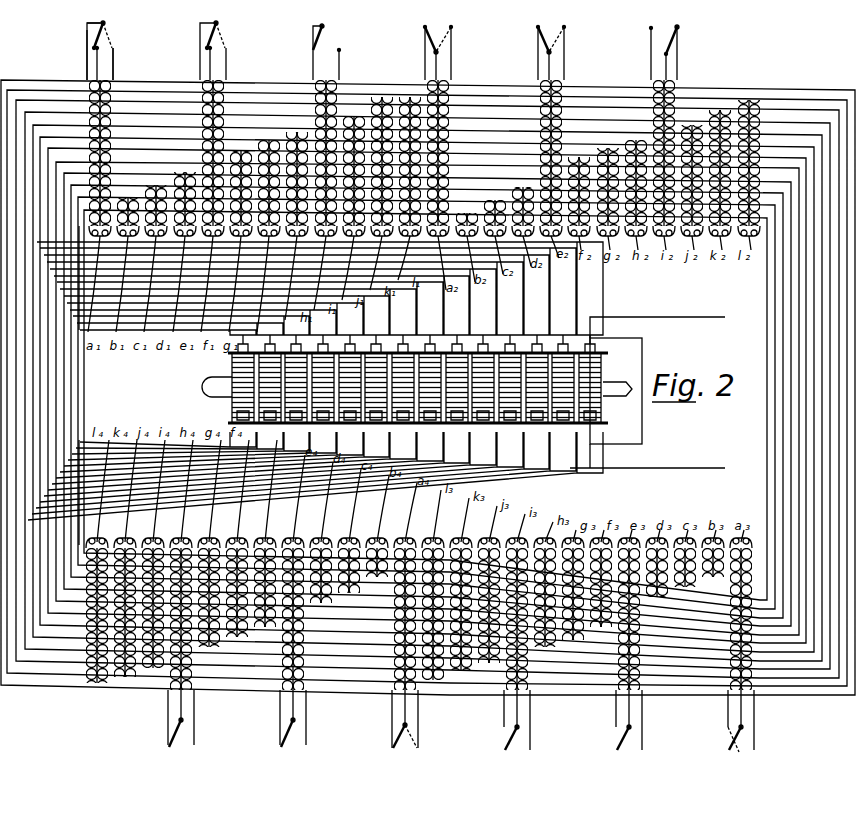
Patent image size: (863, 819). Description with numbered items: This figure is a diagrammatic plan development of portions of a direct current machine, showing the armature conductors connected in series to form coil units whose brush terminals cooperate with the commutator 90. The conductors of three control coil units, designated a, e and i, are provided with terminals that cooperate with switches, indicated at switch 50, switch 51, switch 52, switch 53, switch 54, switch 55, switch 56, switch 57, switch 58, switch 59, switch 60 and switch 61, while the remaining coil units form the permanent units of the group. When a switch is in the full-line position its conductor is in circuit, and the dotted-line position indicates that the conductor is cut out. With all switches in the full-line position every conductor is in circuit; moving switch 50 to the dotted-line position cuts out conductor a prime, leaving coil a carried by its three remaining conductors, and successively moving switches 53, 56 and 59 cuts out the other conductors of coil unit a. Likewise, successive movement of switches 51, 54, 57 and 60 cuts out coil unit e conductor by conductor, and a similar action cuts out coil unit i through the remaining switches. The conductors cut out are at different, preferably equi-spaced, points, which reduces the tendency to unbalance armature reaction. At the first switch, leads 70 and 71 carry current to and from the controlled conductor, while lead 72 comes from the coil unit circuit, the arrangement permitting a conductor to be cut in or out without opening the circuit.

The switch 50 is at (112, 50).
The switch 51 is at (227, 50).
The switch 52 is at (340, 52).
The switch 53 is at (452, 50).
The switch 54 is at (564, 50).
The switch 55 is at (677, 50).
The switch 56 is at (724, 723).
The switch 57 is at (613, 723).
The switch 58 is at (501, 723).
The switch 59 is at (385, 723).
The switch 60 is at (276, 723).
The switch 61 is at (165, 723).
The lead 70 is at (87, 63).
The lead 71 is at (113, 63).
The lead from the coil unit circuit 72 is at (87, 25).
The commutator 90 is at (596, 387).